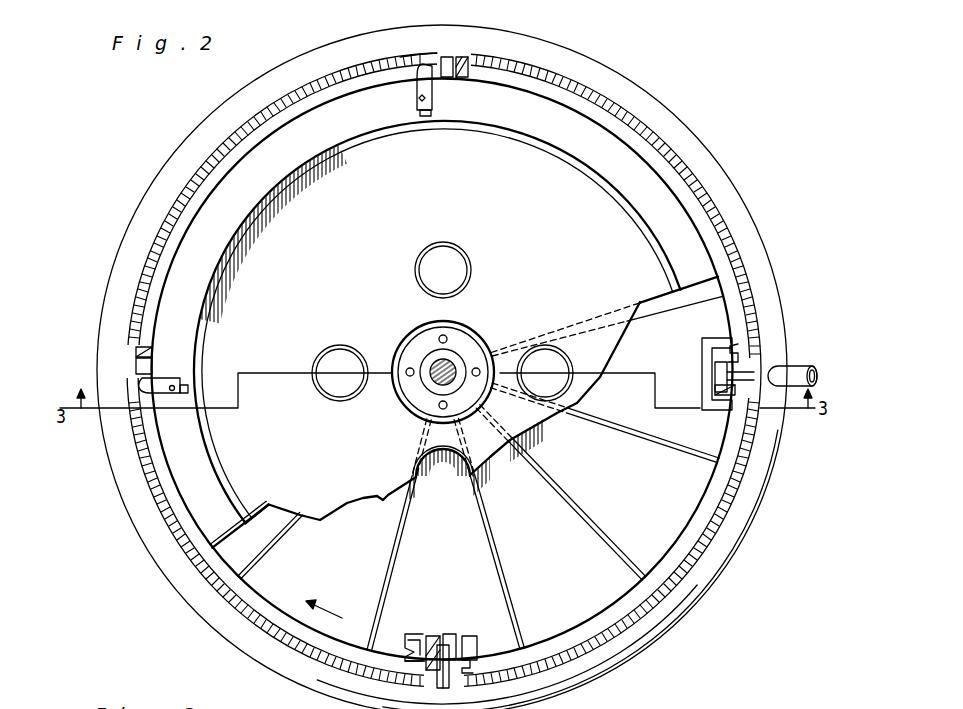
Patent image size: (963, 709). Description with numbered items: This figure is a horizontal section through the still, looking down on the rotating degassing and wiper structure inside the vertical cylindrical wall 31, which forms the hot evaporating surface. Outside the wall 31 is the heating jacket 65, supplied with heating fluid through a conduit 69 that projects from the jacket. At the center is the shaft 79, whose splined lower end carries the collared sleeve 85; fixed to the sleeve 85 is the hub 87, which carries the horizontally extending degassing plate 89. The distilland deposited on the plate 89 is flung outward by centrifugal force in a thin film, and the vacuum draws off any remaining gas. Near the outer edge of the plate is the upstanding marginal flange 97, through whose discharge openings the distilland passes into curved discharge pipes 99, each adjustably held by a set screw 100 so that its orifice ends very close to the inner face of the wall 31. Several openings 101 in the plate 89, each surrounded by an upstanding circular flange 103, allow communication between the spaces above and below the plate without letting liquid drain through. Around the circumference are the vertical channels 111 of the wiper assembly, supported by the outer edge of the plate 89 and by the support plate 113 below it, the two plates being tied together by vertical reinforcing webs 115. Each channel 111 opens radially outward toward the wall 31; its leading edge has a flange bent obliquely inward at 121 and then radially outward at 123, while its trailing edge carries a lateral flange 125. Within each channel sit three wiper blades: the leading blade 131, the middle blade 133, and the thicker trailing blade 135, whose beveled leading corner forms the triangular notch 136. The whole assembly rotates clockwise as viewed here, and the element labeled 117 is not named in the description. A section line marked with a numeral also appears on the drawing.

The vertical cylindrical wall 31 is at (608, 663).
The heating jacket 65 is at (712, 576).
The conduit 69 is at (797, 365).
The shaft 79 is at (432, 362).
The collared sleeve 85 is at (448, 353).
The hub 87 is at (482, 345).
The degassing plate 89 is at (692, 245).
The upstanding marginal flange 97 is at (615, 197).
The discharge pipe 99 is at (158, 378).
The set screw 100 is at (172, 392).
The opening 101 is at (328, 380).
The upstanding circular flange 103 is at (343, 400).
The vertical channel 111 is at (452, 634).
The support plate 113 is at (622, 588).
The vertical reinforcing web 115 is at (489, 517).
The hook member 117 is at (420, 614).
The oblique flange 121 is at (405, 640).
The radial flange portion 123 is at (417, 665).
The lateral flange 125 is at (477, 650).
The leading wiper blade 131 is at (438, 632).
The middle blade 133 is at (445, 665).
The trailing wiper blade 135 is at (468, 668).
The triangular notch 136 is at (437, 62).